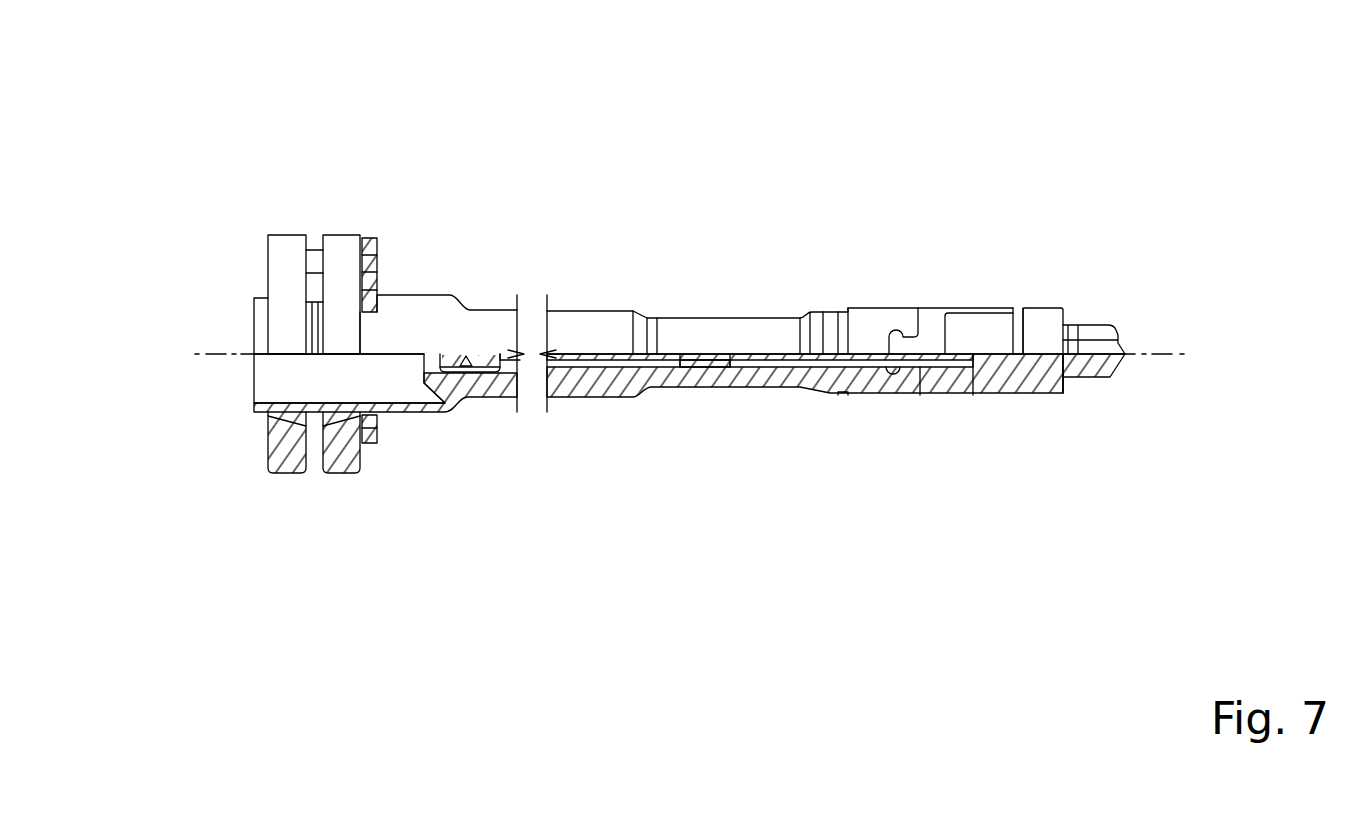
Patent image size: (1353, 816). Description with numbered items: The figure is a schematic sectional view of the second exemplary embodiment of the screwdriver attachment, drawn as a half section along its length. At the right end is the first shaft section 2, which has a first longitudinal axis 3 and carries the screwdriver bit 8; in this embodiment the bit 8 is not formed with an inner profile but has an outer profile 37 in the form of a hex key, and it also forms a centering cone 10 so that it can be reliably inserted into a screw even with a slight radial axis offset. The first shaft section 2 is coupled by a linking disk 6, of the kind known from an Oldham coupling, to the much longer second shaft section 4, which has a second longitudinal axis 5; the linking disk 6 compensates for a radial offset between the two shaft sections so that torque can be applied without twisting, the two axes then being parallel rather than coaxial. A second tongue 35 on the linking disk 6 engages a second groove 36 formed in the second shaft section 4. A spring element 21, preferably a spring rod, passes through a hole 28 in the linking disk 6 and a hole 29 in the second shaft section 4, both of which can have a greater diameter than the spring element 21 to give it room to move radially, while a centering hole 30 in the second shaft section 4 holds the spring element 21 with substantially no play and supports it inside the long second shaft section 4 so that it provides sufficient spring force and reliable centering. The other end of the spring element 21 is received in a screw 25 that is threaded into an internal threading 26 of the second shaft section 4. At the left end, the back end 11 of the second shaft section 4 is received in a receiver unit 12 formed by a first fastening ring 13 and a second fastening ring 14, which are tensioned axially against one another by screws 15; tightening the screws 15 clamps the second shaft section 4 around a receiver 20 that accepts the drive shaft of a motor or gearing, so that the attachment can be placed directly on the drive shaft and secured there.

The first shaft section 2 is at (1007, 284).
The first longitudinal axis 3 is at (1172, 354).
The second shaft section 4 is at (768, 284).
The second longitudinal axis 5 is at (218, 354).
The linking disk 6 is at (932, 318).
The screwdriver bit 8 is at (1095, 408).
The centering cone 10 is at (1113, 375).
The back end 11 is at (418, 240).
The receiver unit 12 is at (268, 440).
The first fastening ring 13 is at (288, 248).
The second fastening ring 14 is at (345, 248).
The screws 15 is at (379, 252).
The receiver 20 is at (272, 383).
The spring element 21 is at (781, 365).
The screw 25 is at (492, 403).
The internal threading 26 is at (466, 392).
The hole 28 is at (928, 375).
The hole 29 is at (847, 375).
The centering hole 30 is at (710, 378).
The second tongue 35 is at (912, 318).
The second groove 36 is at (874, 334).
The outer profile 37 is at (1095, 330).